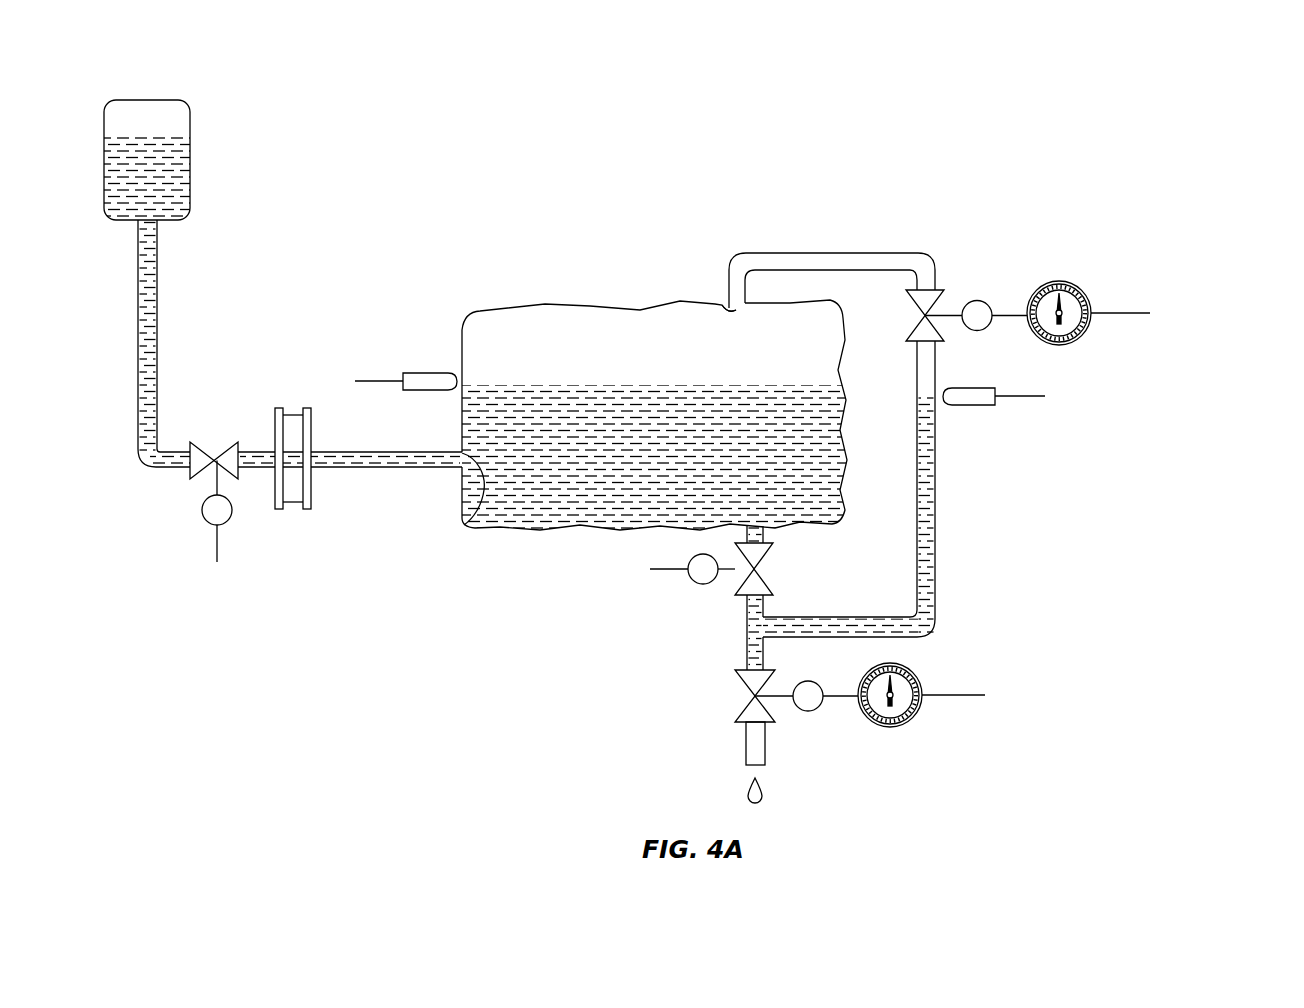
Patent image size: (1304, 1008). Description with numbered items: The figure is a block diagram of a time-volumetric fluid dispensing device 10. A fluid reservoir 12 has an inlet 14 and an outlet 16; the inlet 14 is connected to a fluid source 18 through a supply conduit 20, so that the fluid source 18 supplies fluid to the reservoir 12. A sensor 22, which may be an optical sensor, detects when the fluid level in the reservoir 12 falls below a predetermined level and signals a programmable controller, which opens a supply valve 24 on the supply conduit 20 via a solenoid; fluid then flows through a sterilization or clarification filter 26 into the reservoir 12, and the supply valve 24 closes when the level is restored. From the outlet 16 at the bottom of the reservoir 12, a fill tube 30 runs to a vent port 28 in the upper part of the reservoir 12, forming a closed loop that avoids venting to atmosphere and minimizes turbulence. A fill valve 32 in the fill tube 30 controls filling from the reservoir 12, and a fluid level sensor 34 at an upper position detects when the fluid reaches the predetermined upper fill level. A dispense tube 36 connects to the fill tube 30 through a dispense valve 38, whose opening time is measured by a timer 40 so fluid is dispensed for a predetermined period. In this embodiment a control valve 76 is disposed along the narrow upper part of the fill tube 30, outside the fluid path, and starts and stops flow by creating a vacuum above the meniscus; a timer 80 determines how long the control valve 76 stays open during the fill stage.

The fluid dispensing device 10 is at (980, 134).
The fluid reservoir 12 is at (523, 312).
The inlet 14 is at (475, 523).
The outlet 16 is at (778, 522).
The fluid source 18 is at (190, 140).
The supply conduit 20 is at (138, 312).
The sensor 22 is at (428, 373).
The supply valve 24 is at (190, 468).
The sterilization or clarification filter 26 is at (311, 488).
The vent port 28 is at (718, 306).
The fill tube 30 is at (868, 253).
The fill valve 32 is at (768, 588).
The fluid level sensor 34 is at (960, 388).
The dispense tube 36 is at (765, 745).
The dispense valve 38 is at (740, 710).
The timer 40 is at (915, 673).
The control valve 76 is at (936, 296).
The timer 80 is at (1085, 292).